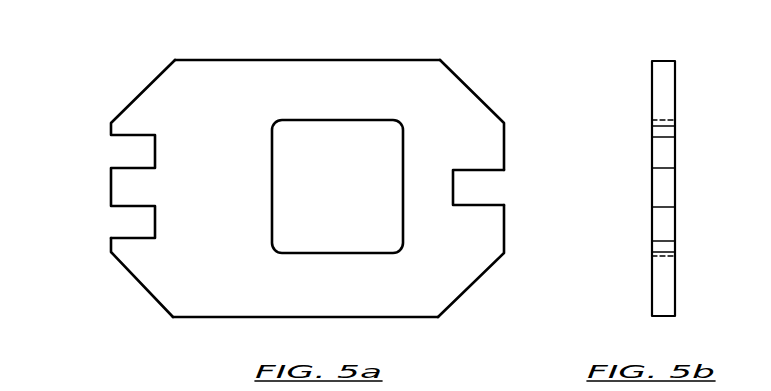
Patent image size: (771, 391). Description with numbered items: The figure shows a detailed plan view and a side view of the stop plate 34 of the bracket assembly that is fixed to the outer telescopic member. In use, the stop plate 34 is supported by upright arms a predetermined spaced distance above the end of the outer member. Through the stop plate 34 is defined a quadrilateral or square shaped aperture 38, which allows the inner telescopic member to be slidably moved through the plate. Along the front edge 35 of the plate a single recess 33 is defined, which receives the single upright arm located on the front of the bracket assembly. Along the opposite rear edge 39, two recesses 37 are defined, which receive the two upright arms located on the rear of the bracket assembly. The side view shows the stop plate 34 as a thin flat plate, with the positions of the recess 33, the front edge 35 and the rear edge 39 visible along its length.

In FIG. 5a, the recess 33 is at (506, 184).
In FIG. 5b, the recess 33 is at (661, 185).
In FIG. 5a, the stop plate 34 is at (475, 250).
In FIG. 5b, the stop plate 34 is at (689, 120).
In FIG. 5a, the front edge 35 is at (504, 145).
In FIG. 5b, the front edge 35 is at (662, 288).
In FIG. 5a, the recesses 37 is at (99, 222).
In FIG. 5a, the aperture 38 is at (357, 152).
In FIG. 5a, the rear edge 39 is at (125, 276).